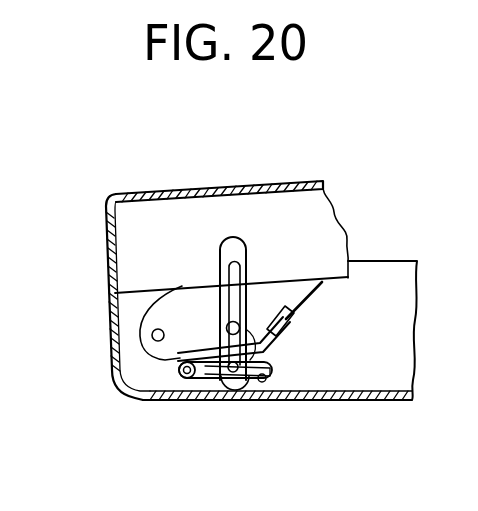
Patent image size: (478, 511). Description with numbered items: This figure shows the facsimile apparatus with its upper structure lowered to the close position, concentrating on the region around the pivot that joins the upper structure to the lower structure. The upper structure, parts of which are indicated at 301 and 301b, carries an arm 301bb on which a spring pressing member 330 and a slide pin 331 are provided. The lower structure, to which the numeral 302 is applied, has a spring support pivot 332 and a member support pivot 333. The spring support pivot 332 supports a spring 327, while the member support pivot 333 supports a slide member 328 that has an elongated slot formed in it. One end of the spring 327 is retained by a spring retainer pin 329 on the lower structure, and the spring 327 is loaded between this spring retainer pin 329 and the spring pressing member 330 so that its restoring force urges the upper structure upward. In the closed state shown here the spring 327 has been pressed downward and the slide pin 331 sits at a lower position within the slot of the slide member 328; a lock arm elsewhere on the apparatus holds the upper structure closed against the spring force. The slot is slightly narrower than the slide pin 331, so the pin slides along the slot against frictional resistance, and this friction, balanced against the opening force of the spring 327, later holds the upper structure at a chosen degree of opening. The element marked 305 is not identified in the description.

The housing 301 is at (132, 220).
The top wall of housing 301b is at (213, 182).
The arm 301bb is at (193, 310).
The base plate 302 is at (377, 382).
The pin 305 is at (152, 338).
The spring 327 is at (180, 378).
The slide member 328 is at (240, 250).
The spring retainer pin 329 is at (268, 380).
The spring pressing member 330 is at (290, 318).
The slide pin 331 is at (248, 378).
The spring support pivot 332 is at (200, 380).
The member support pivot 333 is at (236, 378).